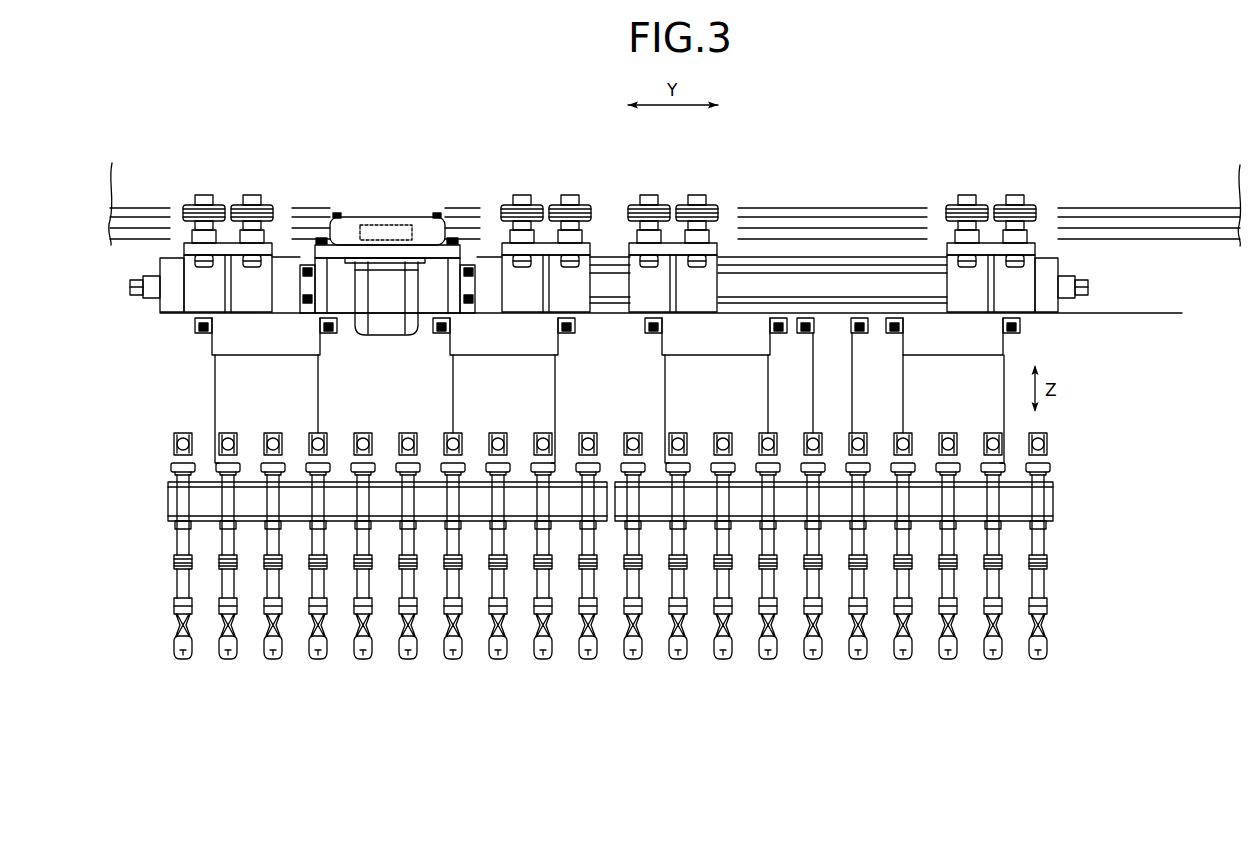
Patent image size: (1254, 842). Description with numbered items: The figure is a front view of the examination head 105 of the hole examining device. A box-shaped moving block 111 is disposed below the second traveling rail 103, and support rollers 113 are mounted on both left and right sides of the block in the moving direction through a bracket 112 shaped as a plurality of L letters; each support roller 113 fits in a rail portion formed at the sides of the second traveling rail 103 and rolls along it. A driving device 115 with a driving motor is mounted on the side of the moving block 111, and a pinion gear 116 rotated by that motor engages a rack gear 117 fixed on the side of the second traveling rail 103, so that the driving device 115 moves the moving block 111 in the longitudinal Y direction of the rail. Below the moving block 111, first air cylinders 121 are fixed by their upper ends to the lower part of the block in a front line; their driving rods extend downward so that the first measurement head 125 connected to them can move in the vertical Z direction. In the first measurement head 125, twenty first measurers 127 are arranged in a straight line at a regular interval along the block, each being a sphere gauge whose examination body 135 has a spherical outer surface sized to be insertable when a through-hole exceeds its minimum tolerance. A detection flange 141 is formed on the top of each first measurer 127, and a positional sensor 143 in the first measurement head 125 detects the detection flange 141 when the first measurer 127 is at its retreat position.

The second traveling rail 103 is at (1224, 193).
The examination head 105 is at (1136, 389).
The moving block 111 is at (830, 257).
The bracket 112 is at (197, 300).
The support roller 113 is at (194, 203).
The driving device 115 is at (386, 302).
The pinion gear 116 is at (395, 217).
The rack gear 117 is at (876, 228).
The first air cylinder 121 is at (214, 374).
The first measurement head 125 is at (1053, 499).
The first measurer 127 is at (1062, 544).
The examination body 135 is at (183, 661).
The detection flange 141 is at (1050, 467).
The second positional sensor 143 is at (1044, 442).